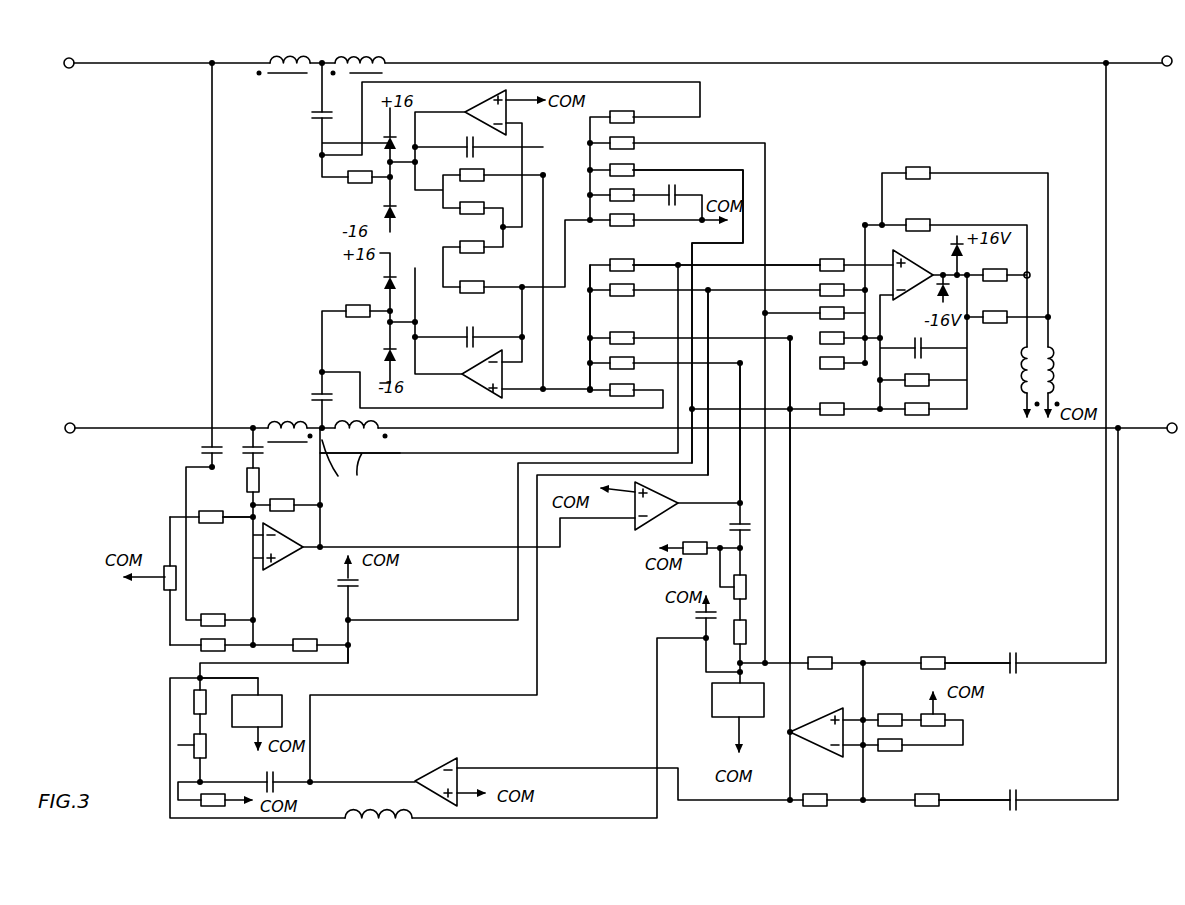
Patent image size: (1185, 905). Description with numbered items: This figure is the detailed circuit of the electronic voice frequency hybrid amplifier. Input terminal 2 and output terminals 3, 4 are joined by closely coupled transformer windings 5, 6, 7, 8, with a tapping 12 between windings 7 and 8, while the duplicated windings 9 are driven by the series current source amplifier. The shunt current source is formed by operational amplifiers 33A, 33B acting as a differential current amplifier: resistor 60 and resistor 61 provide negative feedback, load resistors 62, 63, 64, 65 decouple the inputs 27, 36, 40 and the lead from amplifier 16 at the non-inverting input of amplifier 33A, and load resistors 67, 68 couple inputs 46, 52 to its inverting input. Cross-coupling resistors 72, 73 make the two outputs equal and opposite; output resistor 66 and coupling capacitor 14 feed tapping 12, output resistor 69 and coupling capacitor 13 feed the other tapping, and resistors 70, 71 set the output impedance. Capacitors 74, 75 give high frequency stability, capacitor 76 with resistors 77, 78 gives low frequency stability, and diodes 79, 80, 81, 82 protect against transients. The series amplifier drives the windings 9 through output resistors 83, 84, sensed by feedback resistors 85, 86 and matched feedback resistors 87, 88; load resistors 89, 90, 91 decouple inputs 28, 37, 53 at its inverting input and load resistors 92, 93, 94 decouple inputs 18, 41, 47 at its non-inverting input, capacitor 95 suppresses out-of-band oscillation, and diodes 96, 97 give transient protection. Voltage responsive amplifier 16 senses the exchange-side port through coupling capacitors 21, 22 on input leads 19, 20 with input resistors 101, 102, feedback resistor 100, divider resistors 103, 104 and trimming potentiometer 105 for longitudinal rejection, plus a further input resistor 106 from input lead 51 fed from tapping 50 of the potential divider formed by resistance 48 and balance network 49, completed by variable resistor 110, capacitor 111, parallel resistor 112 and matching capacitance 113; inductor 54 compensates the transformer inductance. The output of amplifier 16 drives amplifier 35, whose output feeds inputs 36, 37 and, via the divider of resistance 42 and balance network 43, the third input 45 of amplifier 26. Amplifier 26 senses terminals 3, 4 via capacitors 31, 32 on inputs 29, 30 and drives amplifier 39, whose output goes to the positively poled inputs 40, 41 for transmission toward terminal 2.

The input terminal 2 is at (76, 420).
The output terminal 3 is at (1166, 67).
The output terminal 4 is at (1168, 421).
The transformer winding 5 is at (271, 73).
The transformer winding 6 is at (357, 73).
The transformer winding 7 is at (74, 68).
The transformer winding 8 is at (350, 442).
The transformer winding 9 is at (1054, 380).
The tapping 12 is at (325, 463).
The capacitor 13 is at (312, 116).
The capacitor 14 is at (312, 393).
The voltage responsive amplifier 16 is at (285, 560).
The lead 18 is at (784, 274).
The input 19 is at (172, 617).
The input 20 is at (247, 480).
The coupling capacitor 21 is at (201, 450).
The coupling capacitor 22 is at (265, 453).
The amplifier 26 is at (822, 720).
The lead 27 is at (737, 343).
The lead 28 is at (790, 338).
The input 29 is at (1035, 660).
The input 30 is at (1035, 797).
The capacitor 31 is at (1020, 674).
The capacitor 32 is at (1020, 811).
The operational amplifier 33A is at (472, 368).
The operational amplifier 33B is at (508, 115).
The amplifier 35 is at (633, 525).
The positively poled input 36 is at (708, 358).
The negatively poled input 37 is at (796, 366).
The amplifier 39 is at (440, 770).
The positively poled input 40 is at (596, 291).
The positively poled input 41 is at (776, 290).
The resistance 42 is at (746, 633).
The balance network 43 is at (738, 700).
The third input 45 is at (820, 656).
The input 46 is at (706, 143).
The input 47 is at (785, 313).
The resistance 48 is at (194, 704).
The balance network 49 is at (257, 711).
The tapping 50 is at (198, 680).
The input lead 51 is at (350, 646).
The input 52 is at (705, 170).
The input 53 is at (796, 440).
The inductor 54 is at (372, 812).
The resistor 60 is at (478, 287).
The resistor 61 is at (478, 208).
The load resistor 62 is at (622, 259).
The load resistor 63 is at (622, 319).
The load resistor 64 is at (634, 363).
The load resistor 65 is at (634, 290).
The output resistor 66 is at (346, 308).
The load resistor 67 is at (632, 143).
The load resistor 68 is at (632, 170).
The output resistor 69 is at (348, 178).
The resistor 70 is at (632, 115).
The resistor 71 is at (634, 389).
The resistor 72 is at (468, 242).
The resistor 73 is at (462, 172).
The capacitor 74 is at (472, 328).
The capacitor 75 is at (467, 140).
The capacitor 76 is at (680, 193).
The resistor 77 is at (608, 222).
The resistor 78 is at (608, 194).
The diode 79 is at (383, 148).
The diode 80 is at (383, 212).
The diode 81 is at (383, 283).
The diode 82 is at (383, 352).
The output resistor 83 is at (1010, 272).
The output resistor 84 is at (993, 324).
The feedback resistor 85 is at (930, 222).
The feedback resistor 86 is at (930, 170).
The feedback resistor 87 is at (928, 378).
The feedback resistor 88 is at (928, 405).
The load resistor 89 is at (848, 314).
The load resistor 90 is at (846, 367).
The load resistor 91 is at (844, 416).
The load resistor 92 is at (832, 258).
The load resistor 93 is at (850, 284).
The load resistor 94 is at (882, 297).
The capacitor 95 is at (914, 345).
The diode 96 is at (964, 254).
The diode 97 is at (950, 290).
The feedback resistor 100 is at (296, 507).
The input resistor 101 is at (213, 614).
The input resistor 102 is at (245, 520).
The resistor 103 is at (205, 511).
The resistor 104 is at (201, 646).
The trimming potentiometer 105 is at (165, 590).
The input resistor 106 is at (305, 639).
The variable resistor 110 is at (194, 745).
The capacitor 111 is at (278, 790).
The resistor 112 is at (217, 794).
The matching capacitance 113 is at (360, 587).